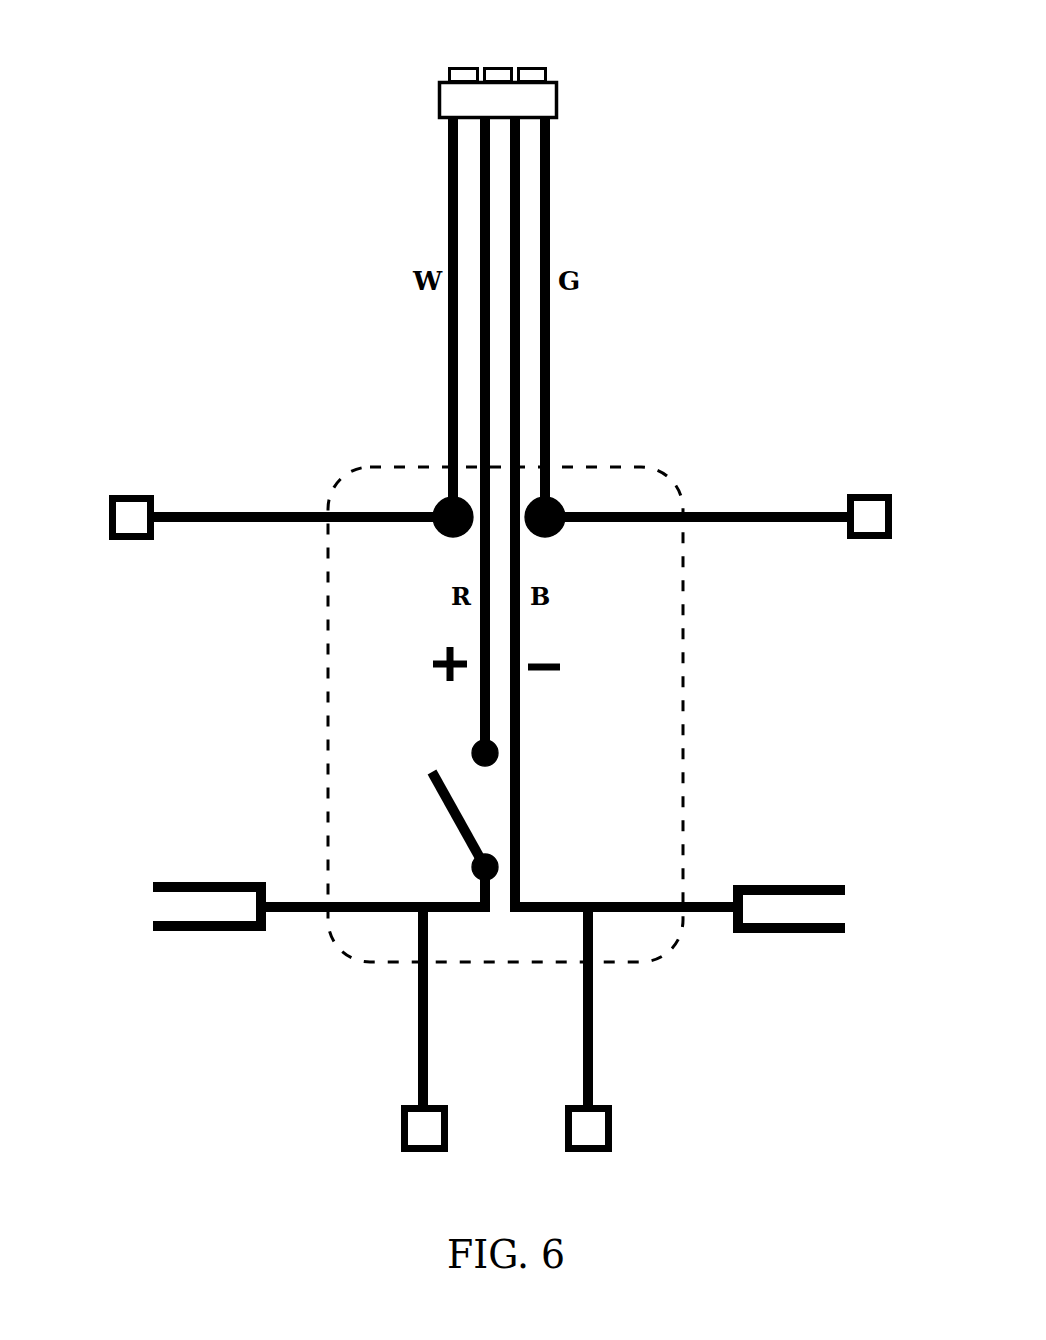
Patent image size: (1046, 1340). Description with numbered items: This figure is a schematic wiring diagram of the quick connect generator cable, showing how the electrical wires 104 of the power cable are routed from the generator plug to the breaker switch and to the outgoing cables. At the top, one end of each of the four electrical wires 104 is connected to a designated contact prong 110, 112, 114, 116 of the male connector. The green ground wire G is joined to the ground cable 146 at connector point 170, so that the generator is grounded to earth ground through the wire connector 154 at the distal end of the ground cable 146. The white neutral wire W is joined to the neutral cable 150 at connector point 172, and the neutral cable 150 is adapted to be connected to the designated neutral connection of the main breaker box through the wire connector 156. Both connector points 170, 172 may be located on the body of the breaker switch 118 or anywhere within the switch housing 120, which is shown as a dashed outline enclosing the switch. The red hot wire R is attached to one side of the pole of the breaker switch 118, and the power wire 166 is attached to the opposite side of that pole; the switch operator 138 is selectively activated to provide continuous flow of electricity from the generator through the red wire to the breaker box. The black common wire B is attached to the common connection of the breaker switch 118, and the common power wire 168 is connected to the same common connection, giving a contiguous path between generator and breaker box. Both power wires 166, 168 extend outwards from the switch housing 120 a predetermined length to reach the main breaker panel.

The electrical wires 104 is at (455, 197).
The electrical contact prong 110 is at (452, 67).
The electrical contact prong 112 is at (494, 67).
The electrical contact prong 114 is at (506, 67).
The electrical contact prong 116 is at (542, 67).
The breaker switch 118 is at (478, 730).
The switch housing 120 is at (688, 698).
The switch operator 138 is at (440, 797).
The ground cable 146 is at (697, 512).
The neutral cable 150 is at (305, 512).
The wire connector 154 is at (870, 510).
The wire connector 156 is at (133, 510).
The power wire 166 is at (418, 1045).
The common power wire 168 is at (594, 1048).
The connector point 170 is at (556, 503).
The connector point 172 is at (442, 503).